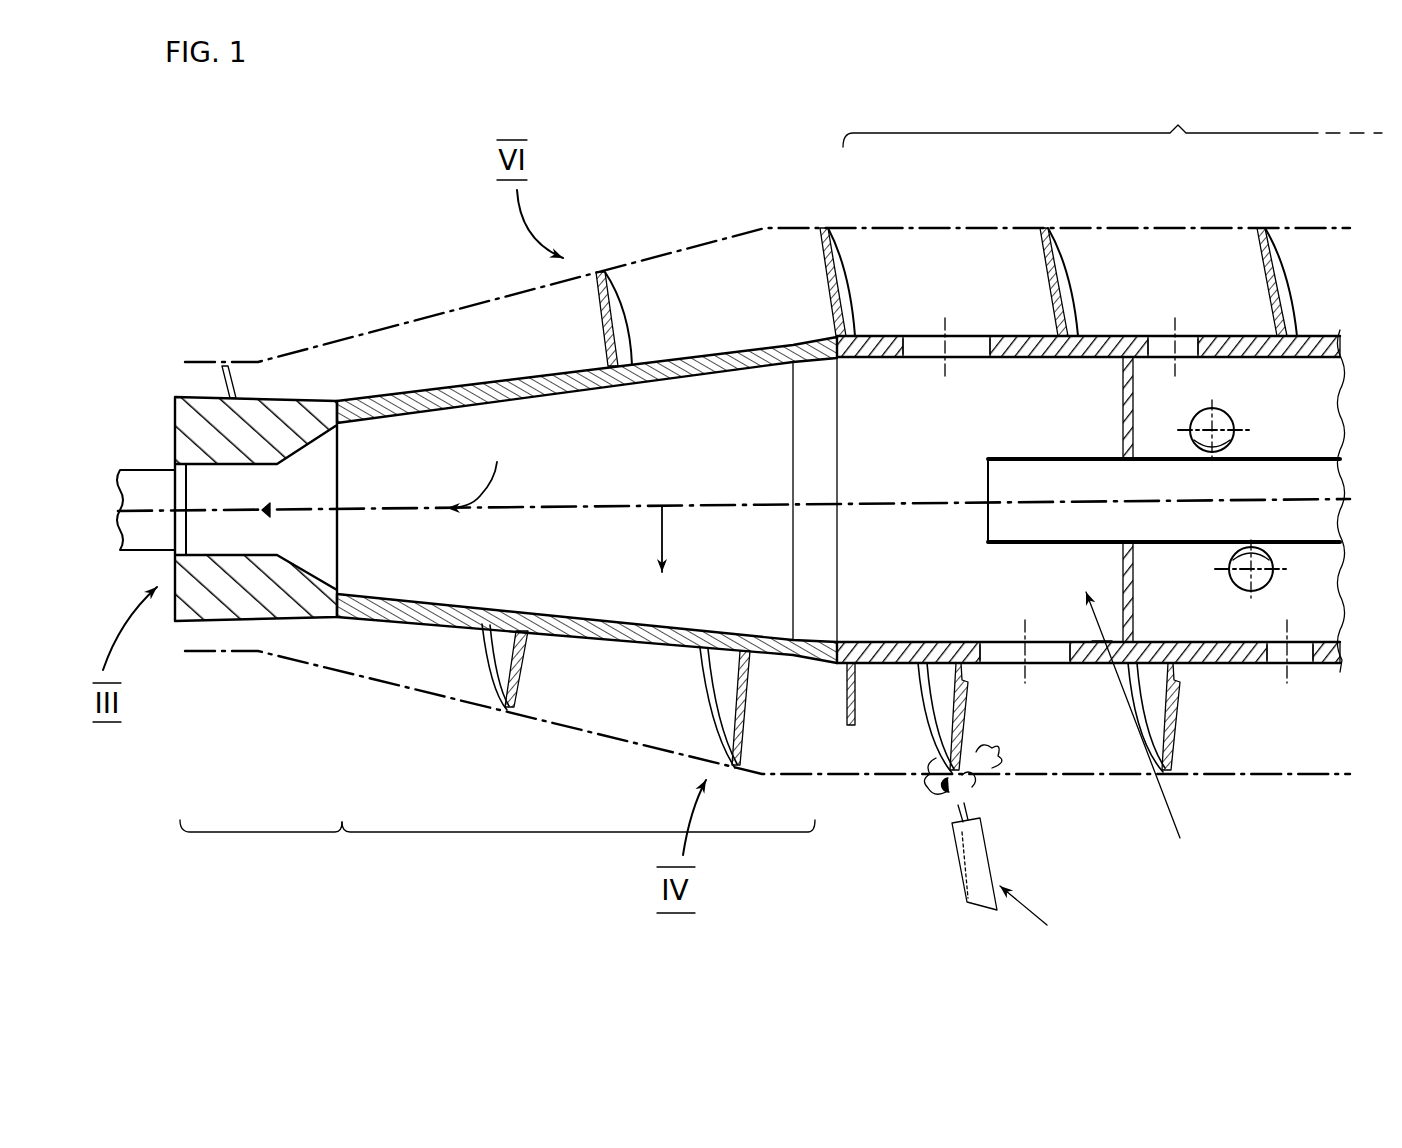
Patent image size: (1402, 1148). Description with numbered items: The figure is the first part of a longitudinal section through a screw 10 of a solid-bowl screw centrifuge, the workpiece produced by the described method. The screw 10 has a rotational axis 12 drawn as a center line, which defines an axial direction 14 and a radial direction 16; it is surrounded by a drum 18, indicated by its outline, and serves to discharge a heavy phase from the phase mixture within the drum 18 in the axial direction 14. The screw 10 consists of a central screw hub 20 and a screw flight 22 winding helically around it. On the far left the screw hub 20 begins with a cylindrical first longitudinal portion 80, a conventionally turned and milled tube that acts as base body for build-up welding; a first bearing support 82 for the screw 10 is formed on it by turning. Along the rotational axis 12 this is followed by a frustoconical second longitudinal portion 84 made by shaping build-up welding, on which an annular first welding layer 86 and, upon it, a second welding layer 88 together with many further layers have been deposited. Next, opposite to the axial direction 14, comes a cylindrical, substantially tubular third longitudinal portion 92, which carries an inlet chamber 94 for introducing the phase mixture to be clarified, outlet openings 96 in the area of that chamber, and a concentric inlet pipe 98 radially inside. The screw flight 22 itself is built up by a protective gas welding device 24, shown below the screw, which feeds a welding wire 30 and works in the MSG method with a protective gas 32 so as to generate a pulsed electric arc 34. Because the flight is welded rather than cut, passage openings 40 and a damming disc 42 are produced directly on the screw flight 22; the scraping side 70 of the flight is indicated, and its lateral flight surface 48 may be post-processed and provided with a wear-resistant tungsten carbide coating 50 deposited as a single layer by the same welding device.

The screw 10 is at (462, 352).
The rotational axis 12 is at (713, 505).
The axial direction 14 is at (479, 463).
The radial direction 16 is at (662, 535).
The drum 18 is at (680, 250).
The screw hub 20 is at (298, 393).
The screw flight 22 is at (840, 282).
The protective gas welding device 24 is at (1040, 924).
The welding wire 30 is at (962, 800).
The protective gas 32 is at (937, 800).
The electric arc 34 is at (985, 790).
The passage openings 40 is at (1092, 298).
The disc 42 is at (858, 712).
The lateral flight surface 48 is at (503, 663).
The wear-resistant coating 50 is at (512, 690).
The scraping side 70 is at (815, 272).
The first longitudinal portion 80 is at (260, 832).
The first bearing support 82 is at (218, 480).
The second longitudinal portion 84 is at (574, 832).
The first welding layer 86 is at (341, 617).
The second welding layer 88 is at (355, 617).
The third longitudinal portion 92 is at (1068, 483).
The inlet chamber 94 is at (1148, 731).
The outlet openings 96 is at (920, 350).
The inlet pipe 98 is at (1197, 545).